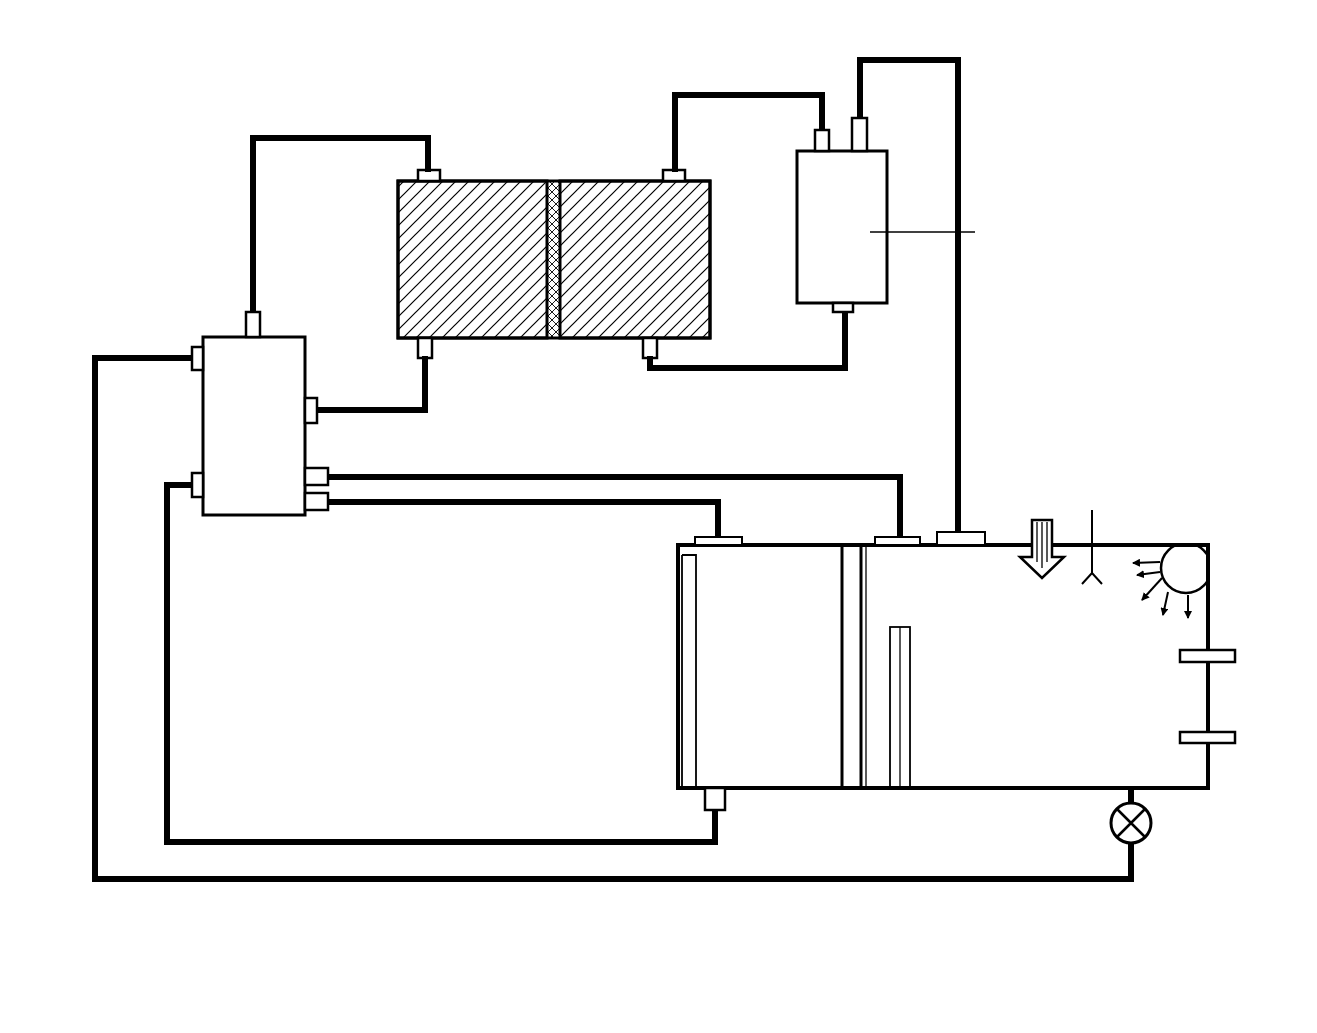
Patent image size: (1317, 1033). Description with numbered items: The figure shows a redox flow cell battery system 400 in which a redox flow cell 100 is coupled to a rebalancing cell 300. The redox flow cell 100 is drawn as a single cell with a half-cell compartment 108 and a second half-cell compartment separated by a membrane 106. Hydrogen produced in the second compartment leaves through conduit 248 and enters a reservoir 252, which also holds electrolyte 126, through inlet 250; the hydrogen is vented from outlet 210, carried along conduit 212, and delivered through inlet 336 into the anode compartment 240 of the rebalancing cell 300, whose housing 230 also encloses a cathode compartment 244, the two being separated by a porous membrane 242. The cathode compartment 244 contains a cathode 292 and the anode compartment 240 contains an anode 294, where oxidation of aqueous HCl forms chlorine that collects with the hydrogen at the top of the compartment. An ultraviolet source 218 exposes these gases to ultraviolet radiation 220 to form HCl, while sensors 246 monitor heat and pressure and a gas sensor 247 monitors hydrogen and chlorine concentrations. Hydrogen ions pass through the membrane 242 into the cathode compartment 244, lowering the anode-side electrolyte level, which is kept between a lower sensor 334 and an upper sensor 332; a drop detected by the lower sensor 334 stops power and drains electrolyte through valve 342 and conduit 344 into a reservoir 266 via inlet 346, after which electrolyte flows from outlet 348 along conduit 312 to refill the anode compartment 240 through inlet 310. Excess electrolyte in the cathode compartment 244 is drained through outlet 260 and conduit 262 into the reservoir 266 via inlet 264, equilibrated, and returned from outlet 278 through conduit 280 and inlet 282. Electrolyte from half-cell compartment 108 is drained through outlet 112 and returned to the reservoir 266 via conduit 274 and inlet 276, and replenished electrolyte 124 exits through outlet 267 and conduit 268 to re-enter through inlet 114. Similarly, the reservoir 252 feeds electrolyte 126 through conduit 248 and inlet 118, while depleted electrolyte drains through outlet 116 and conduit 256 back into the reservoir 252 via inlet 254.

The redox flow cell battery system 400 is at (694, 465).
The redox flow cell 100 is at (554, 259).
The membrane 106 is at (553, 340).
The half-cell compartment 108 is at (470, 186).
The outlet 112 is at (432, 350).
The inlet 114 is at (418, 176).
The outlet 116 is at (643, 350).
The inlet 118 is at (663, 174).
The replenished electrolyte 124 is at (254, 426).
The electrolyte 126 is at (842, 227).
The outlet 210 is at (867, 135).
The conduit 212 is at (962, 306).
The ultraviolet source 218 is at (1195, 552).
The ultraviolet radiation 220 is at (1138, 580).
The tank 230 is at (800, 552).
The anode compartment 240 is at (959, 670).
The porous membrane 242 is at (842, 676).
The cathode compartment 244 is at (732, 670).
The sensors 246 is at (1042, 519).
The gas sensor 247 is at (1092, 515).
The conduit 248 is at (705, 94).
The inlet 250 is at (815, 140).
The reservoir 252 is at (870, 232).
The inlet 254 is at (853, 308).
The conduit 256 is at (775, 366).
The outlet 260 is at (725, 800).
The conduit 262 is at (171, 645).
The inlet 264 is at (192, 472).
The reservoir 266 is at (203, 400).
The outlet 267 is at (246, 310).
The conduit 268 is at (262, 136).
The conduit 274 is at (430, 402).
The inlet 276 is at (317, 397).
The outlet 278 is at (320, 511).
The conduit 280 is at (492, 506).
The inlet 282 is at (695, 540).
The cathode 292 is at (696, 636).
The anode 294 is at (900, 627).
The rebalancing cell 300 is at (952, 790).
The inlet 310 is at (912, 535).
The conduit 312 is at (798, 474).
The upper sensor 332 is at (1180, 656).
The lower sensor 334 is at (1180, 737).
The inlet 336 is at (980, 531).
The valve 342 is at (1111, 821).
The conduit 344 is at (862, 878).
The inlet 346 is at (192, 345).
The outlet 348 is at (328, 467).